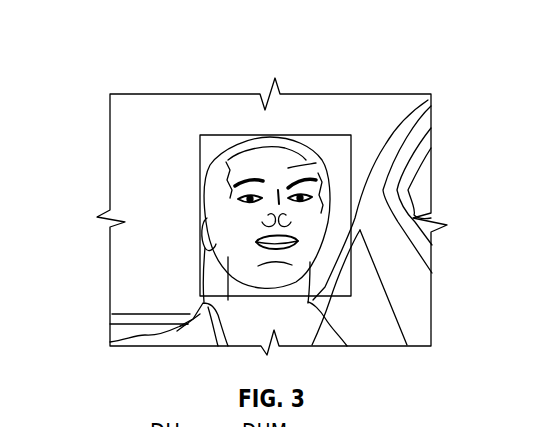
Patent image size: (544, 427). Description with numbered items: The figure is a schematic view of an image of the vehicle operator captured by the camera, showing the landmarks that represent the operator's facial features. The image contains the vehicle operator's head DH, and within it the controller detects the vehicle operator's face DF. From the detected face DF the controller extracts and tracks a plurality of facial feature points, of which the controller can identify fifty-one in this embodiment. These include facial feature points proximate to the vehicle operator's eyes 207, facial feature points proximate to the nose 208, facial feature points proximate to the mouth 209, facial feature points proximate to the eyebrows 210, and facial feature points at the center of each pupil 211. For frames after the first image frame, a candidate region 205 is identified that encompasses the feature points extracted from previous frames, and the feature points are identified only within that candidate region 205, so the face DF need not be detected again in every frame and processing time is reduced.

The candidate region 205 is at (315, 134).
The facial feature points proximate to the vehicle operator's eyes 207 is at (238, 199).
The facial feature points proximate to the vehicle operator's nose 208 is at (290, 212).
The facial feature points proximate to the vehicle operator's mouth 209 is at (297, 245).
The facial feature points proximate to the vehicle operator's eyebrows 210 is at (229, 168).
The facial feature points in the center of each pupil 211 is at (238, 200).
The vehicle operator's head DH is at (252, 146).
The vehicle operator's face DF is at (288, 168).